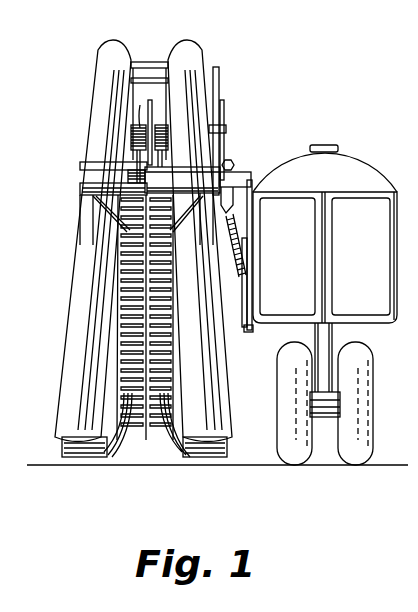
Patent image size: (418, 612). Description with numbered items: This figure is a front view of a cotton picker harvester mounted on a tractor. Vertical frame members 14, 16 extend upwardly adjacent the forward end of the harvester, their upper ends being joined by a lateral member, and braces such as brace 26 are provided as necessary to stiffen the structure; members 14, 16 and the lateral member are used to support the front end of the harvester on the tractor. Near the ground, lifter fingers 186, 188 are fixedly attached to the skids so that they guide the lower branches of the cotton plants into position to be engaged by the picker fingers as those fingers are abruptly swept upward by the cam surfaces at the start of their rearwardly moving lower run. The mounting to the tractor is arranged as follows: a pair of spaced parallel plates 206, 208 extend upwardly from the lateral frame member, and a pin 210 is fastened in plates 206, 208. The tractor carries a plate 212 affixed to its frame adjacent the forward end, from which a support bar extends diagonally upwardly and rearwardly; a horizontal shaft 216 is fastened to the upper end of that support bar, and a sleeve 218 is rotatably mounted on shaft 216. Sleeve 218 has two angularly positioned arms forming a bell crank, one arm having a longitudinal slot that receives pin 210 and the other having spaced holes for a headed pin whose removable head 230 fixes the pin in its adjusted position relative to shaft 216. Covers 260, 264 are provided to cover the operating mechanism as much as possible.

The vertical frame member 14 is at (83, 217).
The vertical frame member 16 is at (240, 228).
The brace 26 is at (107, 228).
The lifter finger 186 is at (117, 440).
The lifter finger 188 is at (177, 446).
The plate 206 is at (148, 125).
The plate 208 is at (165, 138).
The pin 210 is at (128, 147).
The plate 212 is at (250, 332).
The horizontal shaft 216 is at (248, 176).
The sleeve 218 is at (185, 172).
The removable head 230 is at (227, 130).
The cover 260 is at (63, 369).
The cover 264 is at (99, 52).